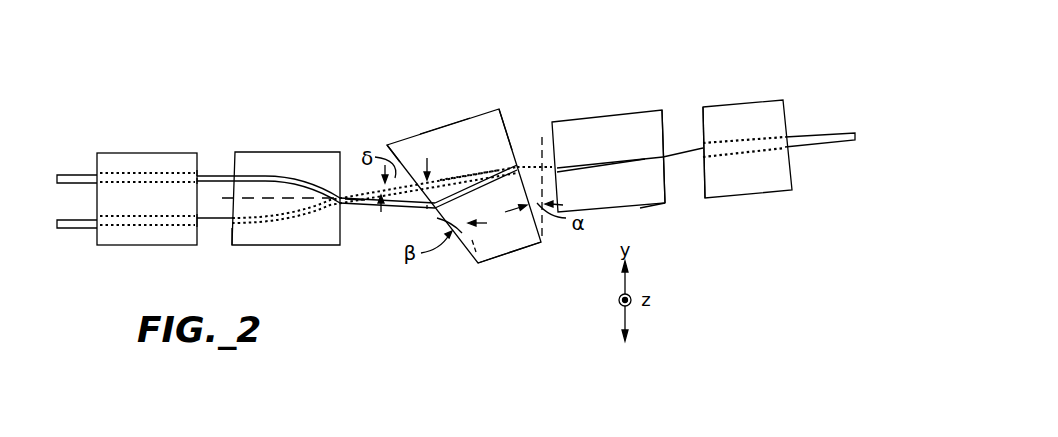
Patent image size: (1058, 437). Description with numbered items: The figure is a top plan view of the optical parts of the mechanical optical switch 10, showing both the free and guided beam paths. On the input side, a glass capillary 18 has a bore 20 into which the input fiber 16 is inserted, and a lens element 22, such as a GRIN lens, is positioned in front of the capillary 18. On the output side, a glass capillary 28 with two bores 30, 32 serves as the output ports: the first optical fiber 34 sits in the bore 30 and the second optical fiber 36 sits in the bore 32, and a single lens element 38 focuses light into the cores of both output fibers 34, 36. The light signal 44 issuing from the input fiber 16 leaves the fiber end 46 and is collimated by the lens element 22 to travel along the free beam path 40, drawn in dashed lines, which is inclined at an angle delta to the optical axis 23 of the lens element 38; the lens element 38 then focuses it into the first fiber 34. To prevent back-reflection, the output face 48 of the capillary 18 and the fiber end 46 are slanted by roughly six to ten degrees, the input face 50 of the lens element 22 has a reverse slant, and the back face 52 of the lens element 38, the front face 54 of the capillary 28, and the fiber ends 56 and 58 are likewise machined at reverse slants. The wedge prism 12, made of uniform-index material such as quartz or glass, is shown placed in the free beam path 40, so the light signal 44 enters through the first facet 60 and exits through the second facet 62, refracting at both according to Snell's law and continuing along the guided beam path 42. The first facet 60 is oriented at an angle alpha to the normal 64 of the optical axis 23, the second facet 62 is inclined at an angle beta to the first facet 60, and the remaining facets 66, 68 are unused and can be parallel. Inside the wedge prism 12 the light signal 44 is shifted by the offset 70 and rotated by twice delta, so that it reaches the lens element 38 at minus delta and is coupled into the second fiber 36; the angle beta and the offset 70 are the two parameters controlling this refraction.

The mechanical optical switch 10 is at (415, 60).
The wedge prism 12 is at (482, 100).
The input fiber 16 is at (817, 130).
The glass capillary 18 is at (758, 193).
The bore 20 is at (767, 137).
The lens element 22 is at (627, 110).
The optical axis 23 is at (273, 198).
The glass capillary 28 is at (152, 152).
The bore 30 is at (110, 231).
The bore 32 is at (108, 172).
The first optical fiber 34 is at (67, 227).
The second optical fiber 36 is at (68, 172).
The lens element 38 is at (323, 152).
The free beam path 40 is at (475, 170).
The guided beam path 42 is at (363, 207).
The light signal 44 is at (682, 148).
The fiber end 46 is at (697, 160).
The output face 48 is at (703, 120).
The input face 50 is at (667, 200).
The back face 52 is at (232, 228).
The front face 54 is at (197, 170).
The fiber end 56 is at (197, 223).
The fiber end 58 is at (198, 180).
The first facet 60 is at (508, 122).
The second facet 62 is at (388, 142).
The normal 64 is at (530, 140).
The facet 66 is at (507, 255).
The facet 68 is at (440, 127).
The offset 70 is at (427, 212).